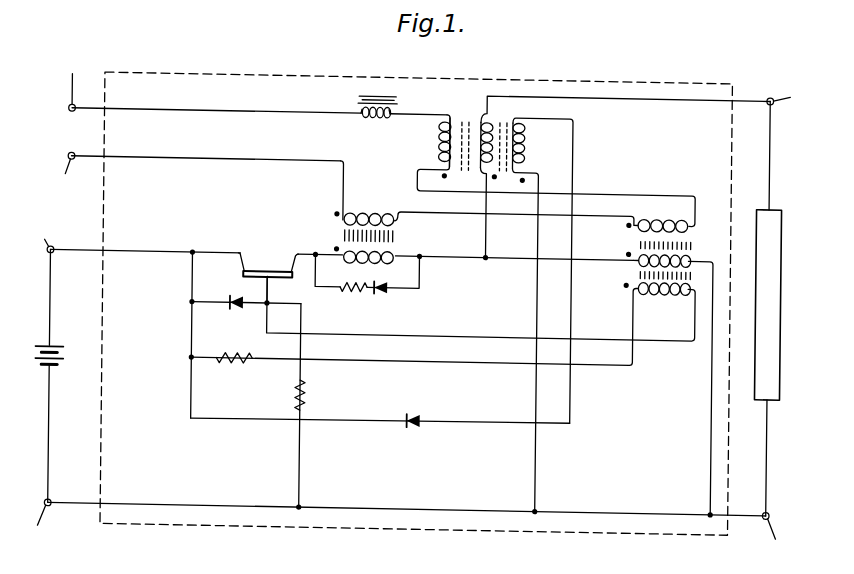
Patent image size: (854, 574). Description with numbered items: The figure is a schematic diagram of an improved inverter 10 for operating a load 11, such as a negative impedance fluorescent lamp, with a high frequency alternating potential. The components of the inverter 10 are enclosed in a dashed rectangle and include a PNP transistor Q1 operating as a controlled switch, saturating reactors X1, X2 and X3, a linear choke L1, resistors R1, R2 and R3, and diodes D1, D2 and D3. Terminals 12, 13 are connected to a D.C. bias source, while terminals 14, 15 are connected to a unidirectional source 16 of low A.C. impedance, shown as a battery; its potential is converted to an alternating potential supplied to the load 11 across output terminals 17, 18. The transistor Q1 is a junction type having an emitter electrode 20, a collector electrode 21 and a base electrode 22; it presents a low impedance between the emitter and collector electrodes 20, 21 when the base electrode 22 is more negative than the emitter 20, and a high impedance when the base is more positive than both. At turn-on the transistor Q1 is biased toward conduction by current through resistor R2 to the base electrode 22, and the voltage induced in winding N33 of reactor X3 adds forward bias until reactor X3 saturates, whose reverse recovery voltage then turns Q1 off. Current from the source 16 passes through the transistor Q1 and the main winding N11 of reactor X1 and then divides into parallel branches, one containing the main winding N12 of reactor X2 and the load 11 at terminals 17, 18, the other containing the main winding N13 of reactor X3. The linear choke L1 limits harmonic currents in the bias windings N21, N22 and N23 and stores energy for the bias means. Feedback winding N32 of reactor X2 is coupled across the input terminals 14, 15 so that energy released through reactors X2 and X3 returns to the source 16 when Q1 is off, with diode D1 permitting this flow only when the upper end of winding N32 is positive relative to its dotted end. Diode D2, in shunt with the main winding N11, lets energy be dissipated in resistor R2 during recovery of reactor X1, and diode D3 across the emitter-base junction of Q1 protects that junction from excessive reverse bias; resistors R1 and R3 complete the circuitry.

The inverter 10 is at (681, 134).
The load 11 is at (781, 292).
The terminal 12 is at (66, 84).
The terminal 13 is at (63, 168).
The terminal 14 is at (42, 238).
The terminal 15 is at (37, 524).
The unidirectional source 16 is at (46, 352).
The output terminal 17 is at (790, 96).
The output terminal 18 is at (775, 535).
The emitter electrode 20 is at (253, 271).
The collector electrode 21 is at (290, 270).
The base electrode 22 is at (269, 296).
The PNP transistor Q1 is at (263, 246).
The linear choke L1 is at (362, 118).
The saturating reactor X1 is at (338, 238).
The saturating reactor X2 is at (421, 154).
The saturating reactor X3 is at (633, 264).
The main winding N11 is at (378, 264).
The bias winding N21 is at (369, 216).
The main winding N12 is at (483, 124).
The bias winding N22 is at (437, 140).
The feedback winding N32 is at (524, 140).
The main winding N13 is at (693, 254).
The bias winding N23 is at (661, 220).
The winding N33 is at (666, 291).
The resistor R1 is at (233, 370).
The resistor R2 is at (309, 396).
The resistor R3 is at (350, 296).
The diode D1 is at (412, 428).
The diode D2 is at (386, 293).
The diode D3 is at (226, 311).